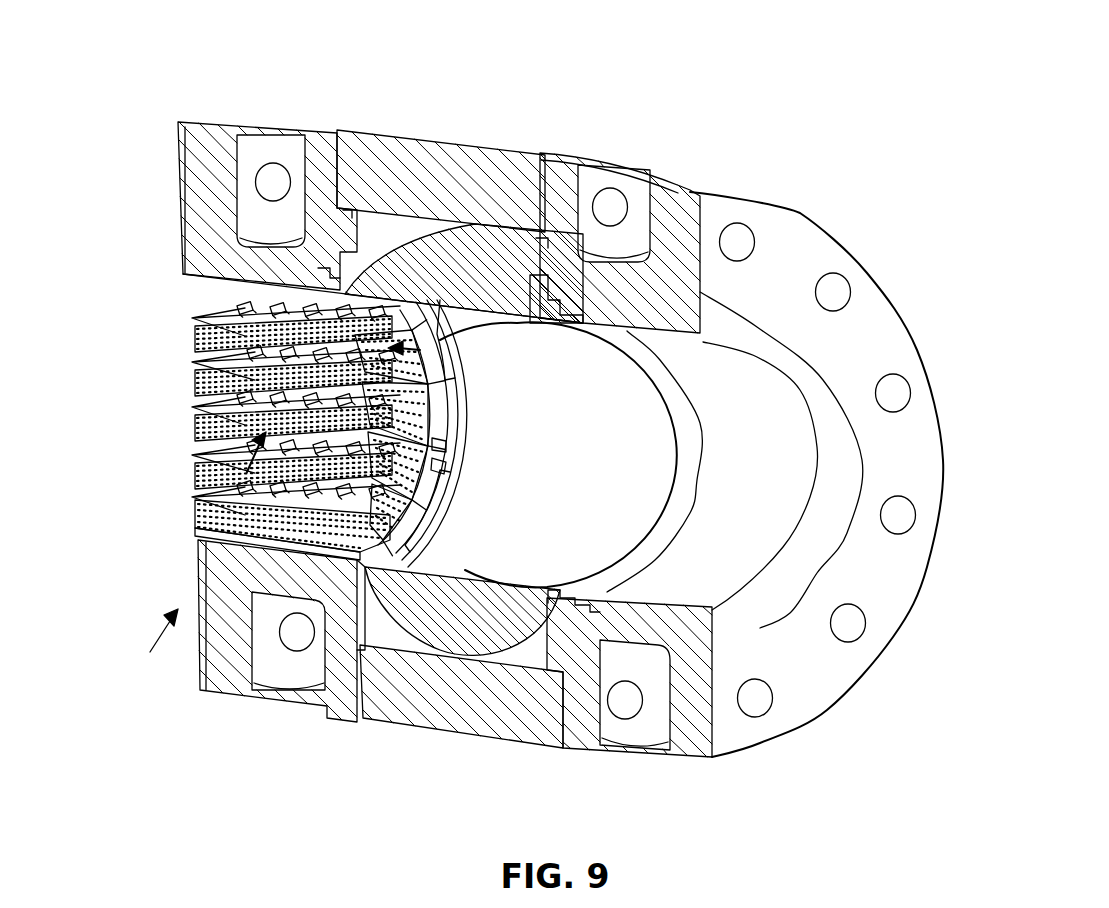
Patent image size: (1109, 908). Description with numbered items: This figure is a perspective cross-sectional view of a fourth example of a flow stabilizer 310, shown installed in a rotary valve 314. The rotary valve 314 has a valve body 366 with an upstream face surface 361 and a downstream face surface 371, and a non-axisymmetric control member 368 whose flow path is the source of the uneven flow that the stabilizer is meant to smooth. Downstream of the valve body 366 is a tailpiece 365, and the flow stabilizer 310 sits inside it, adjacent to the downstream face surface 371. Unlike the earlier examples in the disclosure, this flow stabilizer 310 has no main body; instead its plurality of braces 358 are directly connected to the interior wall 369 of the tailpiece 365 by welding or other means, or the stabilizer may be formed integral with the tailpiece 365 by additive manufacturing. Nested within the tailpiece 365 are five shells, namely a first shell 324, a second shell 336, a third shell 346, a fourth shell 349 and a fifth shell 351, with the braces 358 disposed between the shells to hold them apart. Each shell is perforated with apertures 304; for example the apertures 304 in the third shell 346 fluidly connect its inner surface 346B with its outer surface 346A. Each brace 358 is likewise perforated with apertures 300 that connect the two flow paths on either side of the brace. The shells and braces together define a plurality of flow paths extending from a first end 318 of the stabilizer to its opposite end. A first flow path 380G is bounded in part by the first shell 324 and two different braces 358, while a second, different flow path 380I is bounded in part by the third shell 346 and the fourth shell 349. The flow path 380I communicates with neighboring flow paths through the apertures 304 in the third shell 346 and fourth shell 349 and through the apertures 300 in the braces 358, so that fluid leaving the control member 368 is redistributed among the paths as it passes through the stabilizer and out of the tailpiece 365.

The rotary valve 314 is at (658, 86).
The apertures 300 is at (334, 315).
The braces 358 is at (416, 240).
The first flow path 380G is at (427, 300).
The apertures 304 is at (463, 296).
The interior wall 369 is at (184, 292).
The first shell 324 is at (445, 400).
The outer surface 346A is at (400, 421).
The first end 318 is at (470, 440).
The second flow path 380I is at (182, 442).
The second shell 336 is at (455, 455).
The inner surface 346B is at (430, 470).
The third shell 346 is at (427, 505).
The fourth shell 349 is at (428, 528).
The fifth shell 351 is at (367, 563).
The flow stabilizer 310 is at (148, 645).
The tailpiece 365 is at (232, 700).
The downstream face surface 371 is at (358, 705).
The control member 368 is at (455, 650).
The valve body 366 is at (500, 705).
The upstream face surface 361 is at (575, 730).